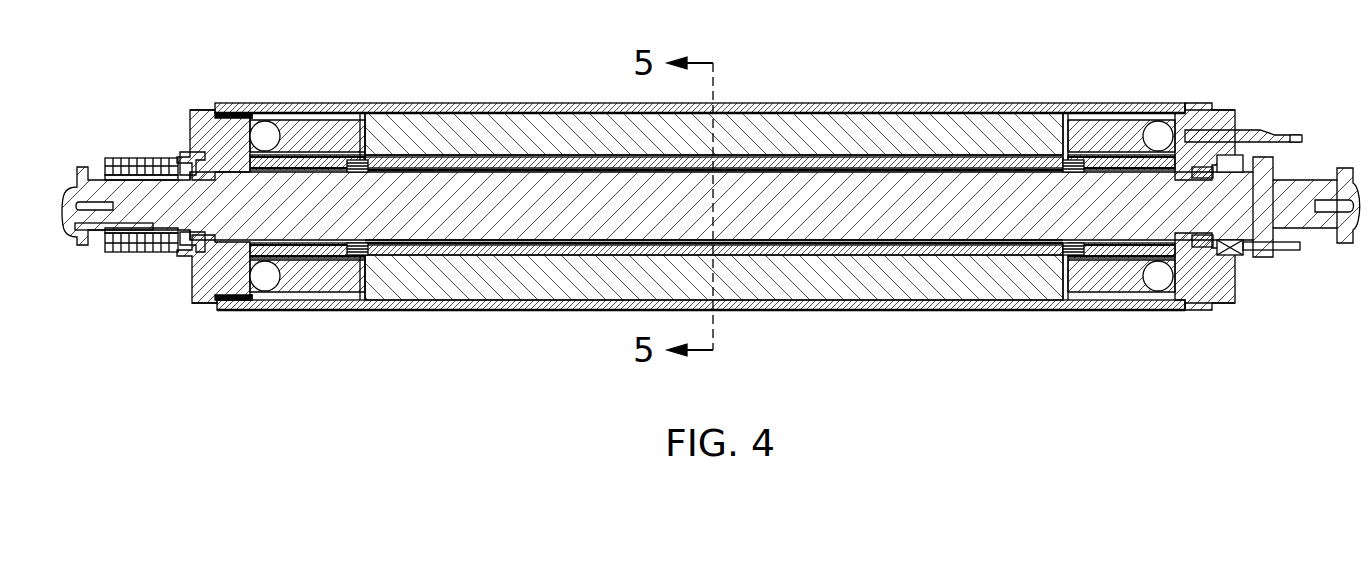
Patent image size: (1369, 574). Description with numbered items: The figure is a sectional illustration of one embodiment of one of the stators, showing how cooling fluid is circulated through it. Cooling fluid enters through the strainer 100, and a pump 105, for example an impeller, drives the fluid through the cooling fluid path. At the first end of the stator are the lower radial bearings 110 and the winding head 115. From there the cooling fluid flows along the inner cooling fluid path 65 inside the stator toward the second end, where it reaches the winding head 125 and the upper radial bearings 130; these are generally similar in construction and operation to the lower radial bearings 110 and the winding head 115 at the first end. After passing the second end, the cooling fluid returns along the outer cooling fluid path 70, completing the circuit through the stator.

The inner cooling fluid path 65 is at (545, 258).
The outer cooling fluid path 70 is at (852, 302).
The strainer 100 is at (133, 262).
The pump 105 is at (203, 178).
The lower radial bearings 110 is at (283, 172).
The winding head 115 is at (315, 278).
The winding head 125 is at (1125, 283).
The upper radial bearings 130 is at (1140, 175).